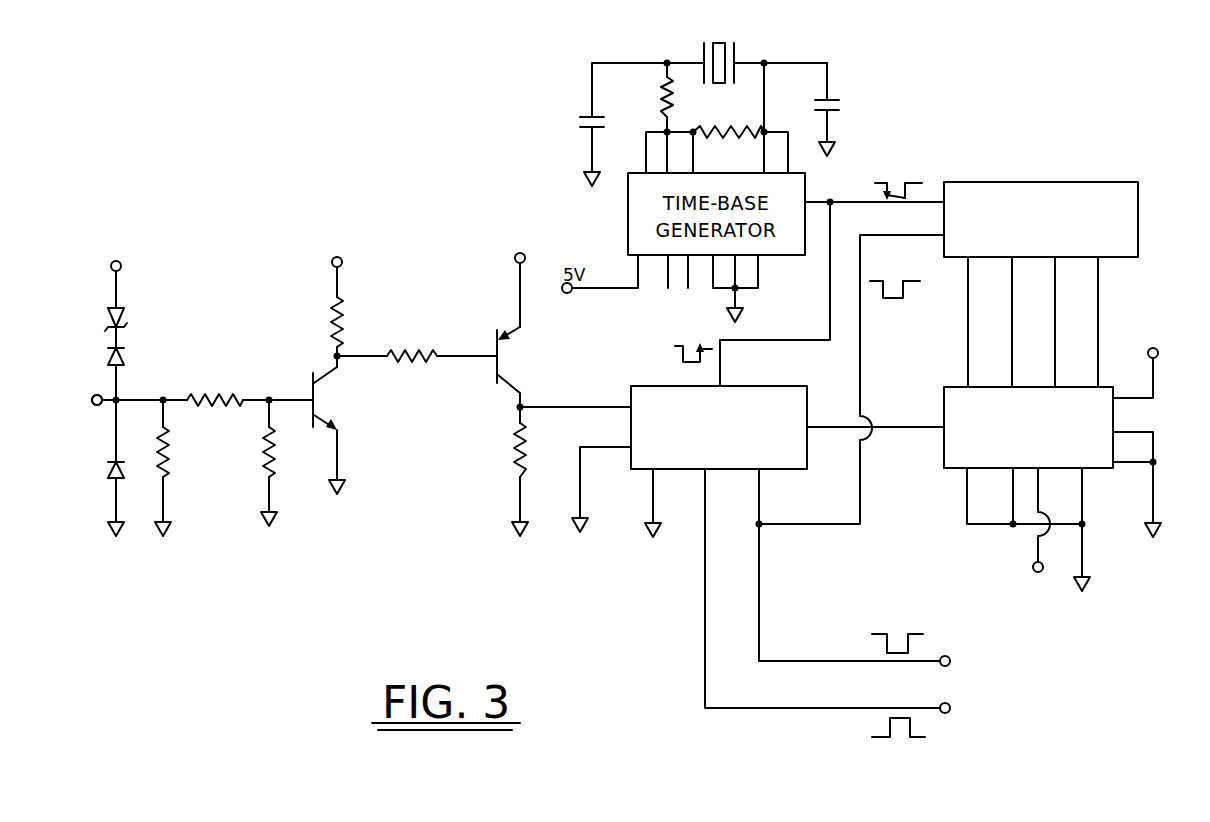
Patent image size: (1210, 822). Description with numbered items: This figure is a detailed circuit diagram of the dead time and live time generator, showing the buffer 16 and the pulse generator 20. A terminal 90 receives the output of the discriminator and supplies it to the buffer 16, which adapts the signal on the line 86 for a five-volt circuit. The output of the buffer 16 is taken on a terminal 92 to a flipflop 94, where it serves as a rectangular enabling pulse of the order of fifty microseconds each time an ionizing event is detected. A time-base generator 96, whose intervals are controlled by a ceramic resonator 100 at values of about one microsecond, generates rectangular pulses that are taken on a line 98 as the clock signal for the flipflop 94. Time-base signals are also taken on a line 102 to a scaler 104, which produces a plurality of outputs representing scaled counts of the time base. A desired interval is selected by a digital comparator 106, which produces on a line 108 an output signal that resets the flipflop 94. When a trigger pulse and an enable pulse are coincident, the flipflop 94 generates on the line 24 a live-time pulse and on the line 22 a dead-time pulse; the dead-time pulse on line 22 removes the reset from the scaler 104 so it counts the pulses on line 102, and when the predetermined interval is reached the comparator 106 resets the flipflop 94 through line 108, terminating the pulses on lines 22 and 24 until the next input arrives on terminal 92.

The buffer 16 is at (219, 371).
The pulse generator 20 is at (908, 366).
The line 22 is at (812, 660).
The line 24 is at (798, 708).
The line 86 is at (74, 391).
The terminal 90 is at (94, 406).
The terminal 92 is at (591, 384).
The flipflop 94 is at (663, 386).
The time-base generator 96 is at (726, 121).
The line 98 is at (752, 294).
The ceramic resonator 100 is at (737, 54).
The line 102 is at (863, 202).
The scaler 104 is at (1010, 182).
The digital comparator 106 is at (952, 470).
The line 108 is at (878, 432).